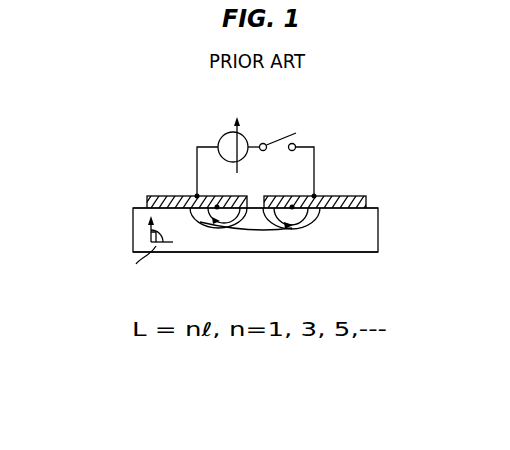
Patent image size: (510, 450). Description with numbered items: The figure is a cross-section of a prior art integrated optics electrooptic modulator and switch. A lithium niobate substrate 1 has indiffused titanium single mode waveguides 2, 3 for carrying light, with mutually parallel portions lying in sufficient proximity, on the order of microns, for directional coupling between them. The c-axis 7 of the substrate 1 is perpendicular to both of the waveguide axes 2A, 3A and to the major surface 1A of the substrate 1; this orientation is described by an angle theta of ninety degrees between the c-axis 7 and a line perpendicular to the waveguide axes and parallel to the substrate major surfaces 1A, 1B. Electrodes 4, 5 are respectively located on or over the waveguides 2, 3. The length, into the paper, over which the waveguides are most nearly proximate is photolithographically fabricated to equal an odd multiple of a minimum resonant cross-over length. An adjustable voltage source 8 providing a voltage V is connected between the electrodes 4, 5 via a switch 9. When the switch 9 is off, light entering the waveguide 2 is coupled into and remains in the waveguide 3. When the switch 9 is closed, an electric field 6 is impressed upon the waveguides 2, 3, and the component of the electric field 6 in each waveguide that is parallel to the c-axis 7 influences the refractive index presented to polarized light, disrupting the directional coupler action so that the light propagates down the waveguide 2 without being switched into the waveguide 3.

The lithium niobate substrate 1 is at (372, 237).
The major surface of substrate 1A is at (366, 209).
The substrate major surface 1B is at (360, 253).
The waveguide 2 is at (205, 229).
The waveguide axis 2A is at (217, 205).
The waveguide 3 is at (305, 231).
The waveguide axis 3A is at (292, 205).
The electrode 4 is at (160, 196).
The electrode 5 is at (347, 196).
The electric field 6 is at (258, 231).
The c-axis 7 is at (152, 235).
The adjustable voltage source 8 is at (219, 134).
The switch 9 is at (299, 133).